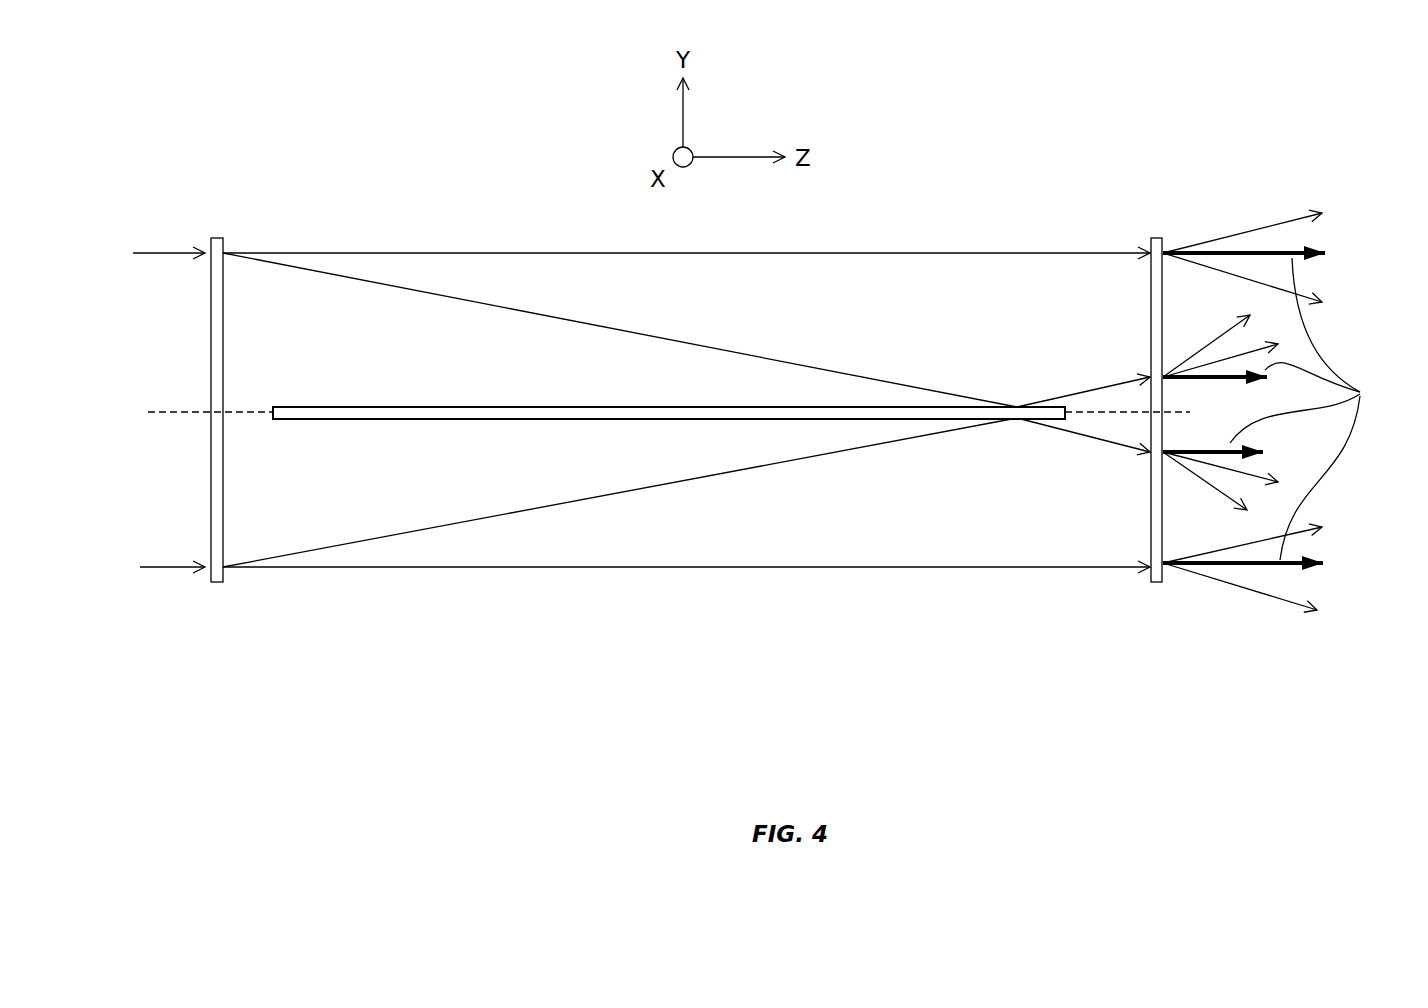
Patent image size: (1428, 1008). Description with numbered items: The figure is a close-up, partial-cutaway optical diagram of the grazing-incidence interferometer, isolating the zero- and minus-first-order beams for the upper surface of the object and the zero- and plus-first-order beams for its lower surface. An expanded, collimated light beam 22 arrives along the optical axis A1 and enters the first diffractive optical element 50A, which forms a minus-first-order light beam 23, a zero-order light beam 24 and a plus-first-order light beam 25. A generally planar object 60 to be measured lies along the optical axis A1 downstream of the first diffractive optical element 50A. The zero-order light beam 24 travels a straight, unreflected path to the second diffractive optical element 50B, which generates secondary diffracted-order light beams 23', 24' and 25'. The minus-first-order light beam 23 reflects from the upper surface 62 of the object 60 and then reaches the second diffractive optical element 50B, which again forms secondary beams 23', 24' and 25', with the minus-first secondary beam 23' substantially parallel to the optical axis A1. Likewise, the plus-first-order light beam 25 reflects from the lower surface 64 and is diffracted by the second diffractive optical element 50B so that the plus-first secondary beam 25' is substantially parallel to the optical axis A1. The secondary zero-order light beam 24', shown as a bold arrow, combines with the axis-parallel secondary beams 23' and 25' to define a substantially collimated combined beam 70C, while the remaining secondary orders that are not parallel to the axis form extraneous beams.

The collimated light beam 22 is at (165, 252).
The first diffractive optical element 50A is at (218, 237).
The second diffractive optical element 50B is at (1155, 236).
The zero-diffracted-order light beam 24 is at (686, 403).
The -1st diffracted-order light beam 23 is at (686, 330).
The +1st diffracted-order light beam 25 is at (686, 492).
The optical axis A1 is at (185, 414).
The object 60 is at (595, 422).
The upper surface 62 is at (497, 407).
The lower surface 64 is at (470, 419).
The -1 secondary diffracted-order light beam 23' is at (1262, 408).
The secondary zero-diffracted-order light beam 24' is at (1266, 408).
The +1 secondary diffracted-order light beam 25' is at (1263, 409).
The combined beam 70C is at (1320, 409).